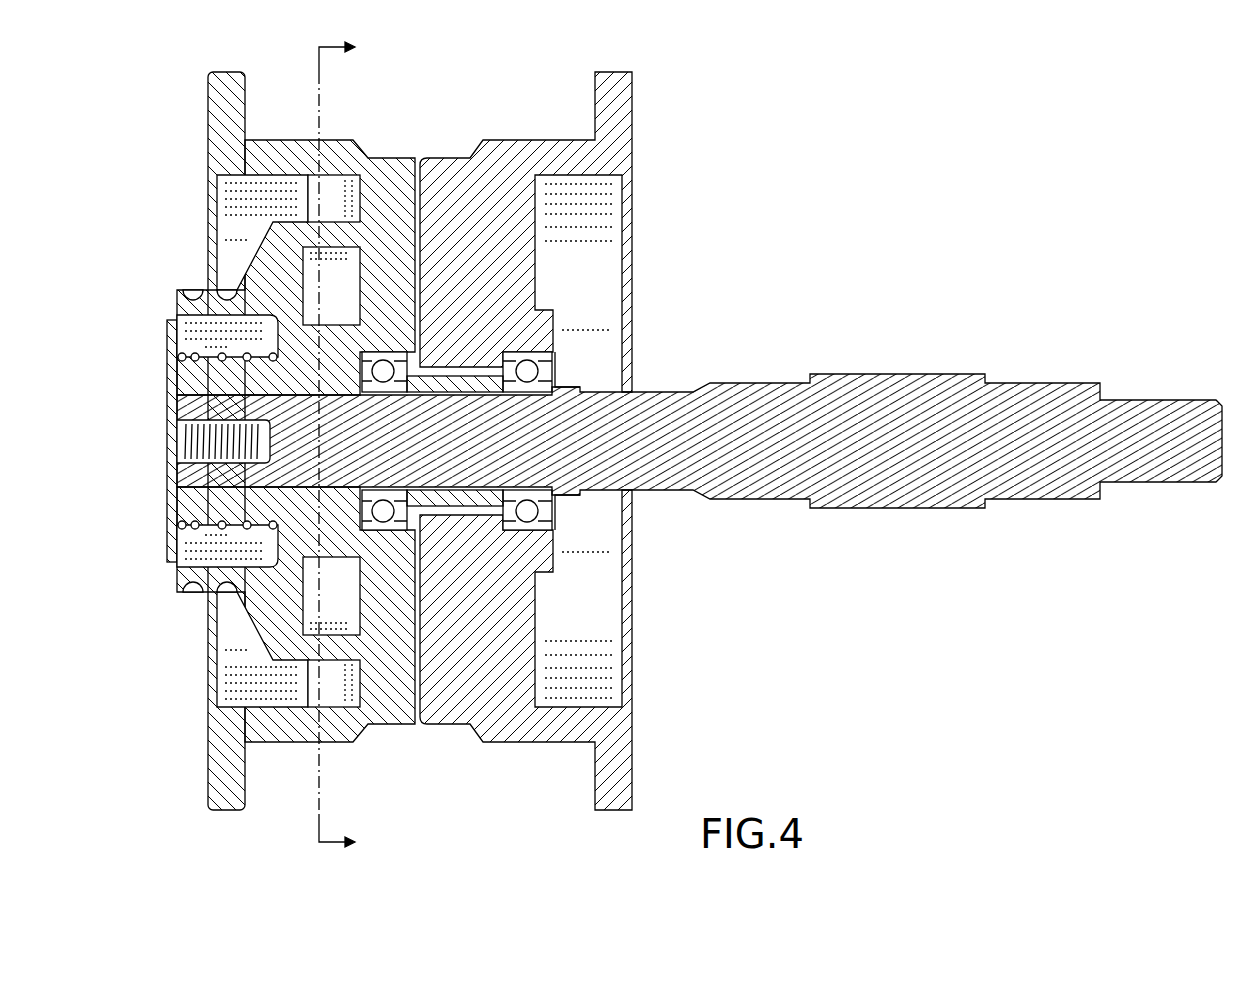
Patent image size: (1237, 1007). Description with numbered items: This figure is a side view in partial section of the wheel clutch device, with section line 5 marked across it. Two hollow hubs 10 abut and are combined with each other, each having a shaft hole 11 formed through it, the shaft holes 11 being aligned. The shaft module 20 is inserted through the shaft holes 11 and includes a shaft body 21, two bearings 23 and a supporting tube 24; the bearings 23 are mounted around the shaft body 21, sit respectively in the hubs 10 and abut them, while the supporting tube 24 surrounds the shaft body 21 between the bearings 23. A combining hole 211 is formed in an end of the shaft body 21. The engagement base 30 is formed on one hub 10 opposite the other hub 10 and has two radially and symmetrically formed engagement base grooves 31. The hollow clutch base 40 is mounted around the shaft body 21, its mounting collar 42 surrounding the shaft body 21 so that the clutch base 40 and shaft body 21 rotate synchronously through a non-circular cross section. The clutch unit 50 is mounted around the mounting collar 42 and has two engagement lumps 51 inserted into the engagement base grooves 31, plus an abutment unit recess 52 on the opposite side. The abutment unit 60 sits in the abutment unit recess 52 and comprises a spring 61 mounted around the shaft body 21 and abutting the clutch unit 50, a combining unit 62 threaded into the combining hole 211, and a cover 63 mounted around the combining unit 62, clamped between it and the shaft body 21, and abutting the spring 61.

The section line 5- 5 is at (347, 448).
The hub 10 is at (400, 168).
The shaft hole 11 is at (362, 358).
The shaft module 20 is at (779, 350).
The shaft body 21 is at (915, 390).
The bearing 23 is at (543, 362).
The supporting tube 24 is at (460, 494).
The engagement base 30 is at (290, 189).
The engagement base groove 31 is at (337, 197).
The clutch base 40 is at (178, 515).
The mounting collar 42 is at (198, 530).
The clutch unit 50 is at (232, 620).
The engagement lump 51 is at (327, 653).
The abutment unit recess 52 is at (272, 533).
The abutment unit 60 is at (130, 453).
The spring 61 is at (183, 355).
The combining unit 62 is at (168, 472).
The cover 63 is at (177, 385).
The combining hole 211 is at (183, 432).